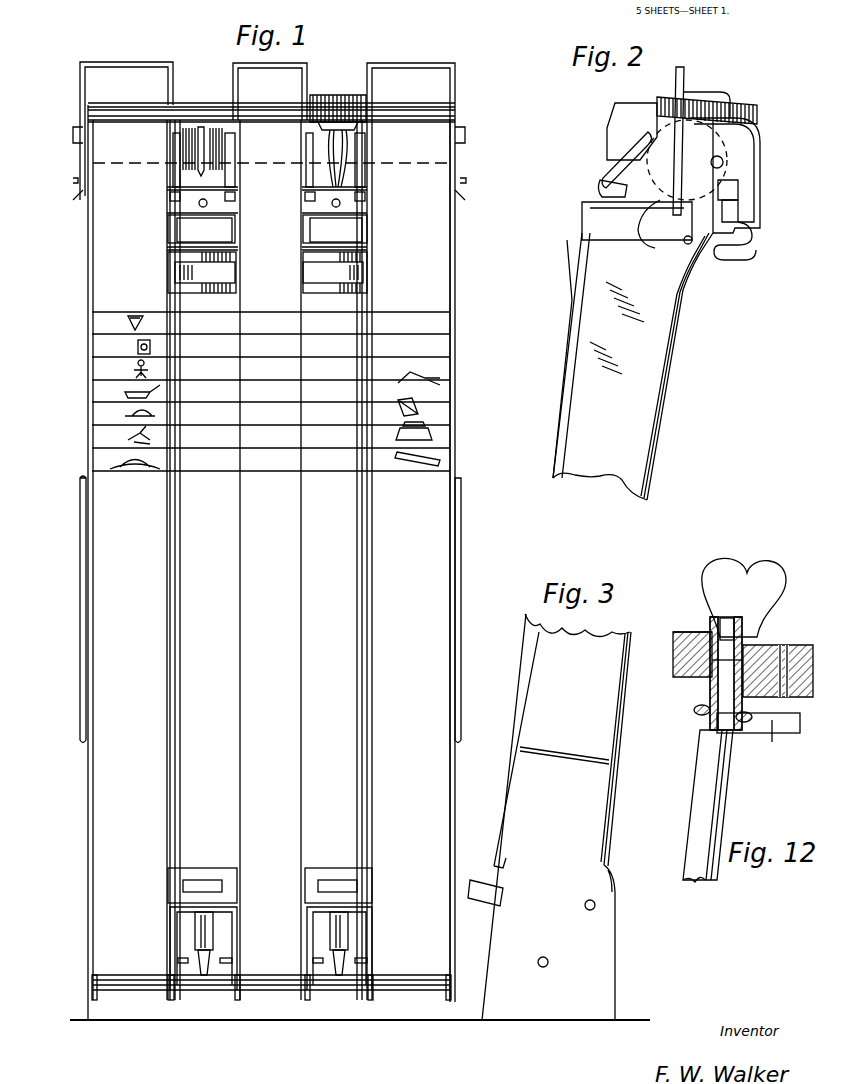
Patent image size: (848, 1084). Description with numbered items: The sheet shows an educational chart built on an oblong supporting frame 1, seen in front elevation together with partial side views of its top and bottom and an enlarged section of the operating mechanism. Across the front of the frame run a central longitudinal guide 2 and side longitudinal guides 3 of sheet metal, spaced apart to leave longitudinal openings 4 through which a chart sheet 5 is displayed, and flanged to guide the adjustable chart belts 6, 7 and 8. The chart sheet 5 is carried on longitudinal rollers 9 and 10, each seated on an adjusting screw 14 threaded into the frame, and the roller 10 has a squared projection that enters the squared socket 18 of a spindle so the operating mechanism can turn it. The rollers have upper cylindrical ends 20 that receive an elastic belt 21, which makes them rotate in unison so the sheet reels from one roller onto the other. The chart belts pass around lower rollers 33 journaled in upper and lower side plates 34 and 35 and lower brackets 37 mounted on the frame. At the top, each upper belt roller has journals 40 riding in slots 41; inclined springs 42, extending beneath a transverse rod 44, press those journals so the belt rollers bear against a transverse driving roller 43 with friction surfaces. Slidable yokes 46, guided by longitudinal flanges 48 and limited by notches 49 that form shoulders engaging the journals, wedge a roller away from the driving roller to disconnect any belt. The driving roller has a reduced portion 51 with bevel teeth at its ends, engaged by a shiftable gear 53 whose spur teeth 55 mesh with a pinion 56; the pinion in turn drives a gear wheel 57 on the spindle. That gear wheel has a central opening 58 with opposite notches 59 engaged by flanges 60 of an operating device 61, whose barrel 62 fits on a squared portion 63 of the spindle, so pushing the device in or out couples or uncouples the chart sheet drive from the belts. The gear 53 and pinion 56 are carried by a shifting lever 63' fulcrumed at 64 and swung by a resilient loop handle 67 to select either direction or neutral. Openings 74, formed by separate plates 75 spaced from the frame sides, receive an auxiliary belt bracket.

In FIG. 2, the oblong supporting frame 1 is at (640, 372).
In FIG. 3, the oblong supporting frame 1 is at (562, 817).
In FIG. 1, the central longitudinal guide 2 is at (402, 372).
In FIG. 1, the side longitudinal guide 3 is at (170, 672).
In FIG. 2, the side longitudinal guide 3 is at (562, 400).
In FIG. 3, the side longitudinal guide 3 is at (500, 796).
In FIG. 1, the longitudinal opening 4 is at (362, 824).
In FIG. 1, the chart sheet 5 is at (337, 760).
In FIG. 1, the central chart belt 6 is at (278, 596).
In FIG. 1, the side chart belt 7 is at (109, 562).
In FIG. 1, the side chart belt 8 is at (428, 560).
In FIG. 1, the longitudinal roller 9 is at (271, 466).
In FIG. 1, the longitudinal roller 10 is at (336, 602).
In FIG. 1, the adjusting screw 14 is at (200, 932).
In FIG. 12, the squared socket 18 is at (700, 784).
In FIG. 1, the upper cylindrical end 20 is at (178, 262).
In FIG. 1, the elastic belt 21 is at (190, 278).
In FIG. 1, the lower roller 33 is at (126, 985).
In FIG. 1, the upper side plate 34 is at (78, 110).
In FIG. 1, the lower side plate 35 is at (90, 998).
In FIG. 1, the lower bracket 37 is at (176, 986).
In FIG. 2, the journal 40 is at (622, 178).
In FIG. 2, the slot 41 is at (640, 150).
In FIG. 1, the spring 42 is at (78, 190).
In FIG. 2, the spring 42 is at (605, 210).
In FIG. 2, the transverse driving roller 43 is at (748, 166).
In FIG. 1, the transverse rod 44 is at (172, 205).
In FIG. 1, the slidable yoke 46 is at (142, 62).
In FIG. 2, the slidable yoke 46 is at (686, 80).
In FIG. 2, the longitudinal flange 48 is at (696, 156).
In FIG. 2, the notch 49 is at (664, 205).
In FIG. 1, the reduced portion 51 is at (352, 160).
In FIG. 1, the gear 53 is at (338, 94).
In FIG. 2, the gear 53 is at (758, 106).
In FIG. 1, the spur teeth 55 is at (362, 108).
In FIG. 2, the spur teeth 55 is at (758, 122).
In FIG. 12, the pinion 56 is at (747, 674).
In FIG. 12, the gear wheel 57 is at (710, 630).
In FIG. 12, the central opening 58 is at (791, 620).
In FIG. 12, the notch 59 is at (730, 625).
In FIG. 12, the flange 60 is at (712, 672).
In FIG. 12, the operating device 61 is at (735, 567).
In FIG. 12, the tubular portion or barrel 62 is at (705, 637).
In FIG. 2, the squared portion 63 is at (761, 199).
In FIG. 12, the squared portion 63 is at (758, 742).
In FIG. 12, the shifting lever 63' is at (676, 709).
In FIG. 12, the fulcrum 64 is at (705, 716).
In FIG. 2, the handle 67 is at (738, 262).
In FIG. 1, the opening 74 is at (82, 517).
In FIG. 1, the plate 75 is at (82, 572).